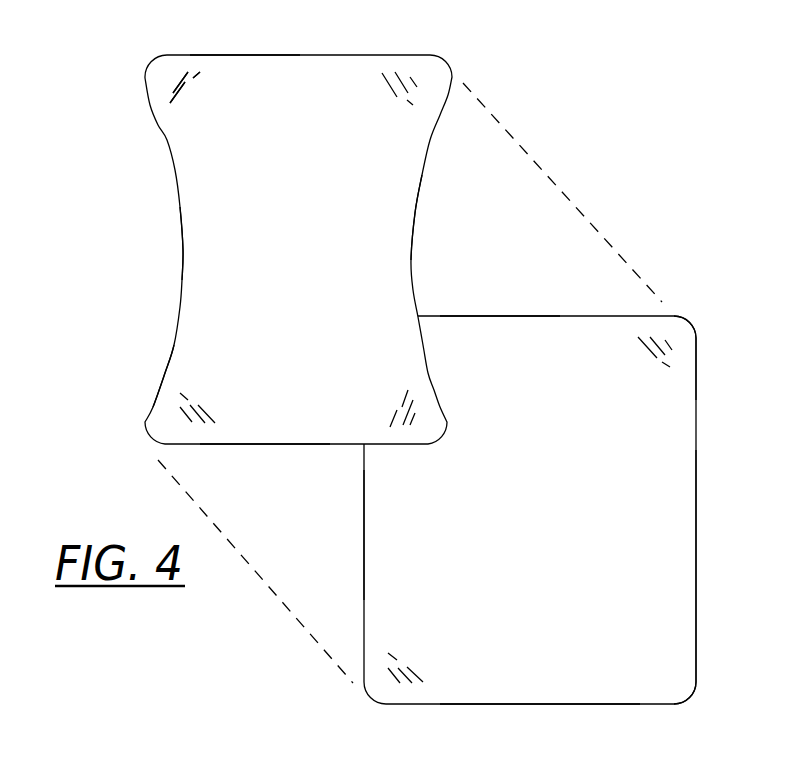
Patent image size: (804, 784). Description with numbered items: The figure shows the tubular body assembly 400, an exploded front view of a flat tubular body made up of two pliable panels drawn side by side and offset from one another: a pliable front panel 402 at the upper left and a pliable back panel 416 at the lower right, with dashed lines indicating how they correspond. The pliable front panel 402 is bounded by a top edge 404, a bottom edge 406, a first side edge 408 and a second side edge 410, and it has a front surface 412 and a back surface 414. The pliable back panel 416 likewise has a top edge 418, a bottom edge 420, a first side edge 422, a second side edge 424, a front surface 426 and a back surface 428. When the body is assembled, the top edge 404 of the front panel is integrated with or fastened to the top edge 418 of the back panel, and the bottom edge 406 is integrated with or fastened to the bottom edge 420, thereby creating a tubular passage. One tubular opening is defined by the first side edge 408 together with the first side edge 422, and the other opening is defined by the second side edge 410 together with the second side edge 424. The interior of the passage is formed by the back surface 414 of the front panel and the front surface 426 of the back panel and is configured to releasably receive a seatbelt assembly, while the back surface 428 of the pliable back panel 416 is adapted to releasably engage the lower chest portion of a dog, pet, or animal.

The tubular body assembly 400 is at (606, 124).
The pliable front panel 402 is at (313, 245).
The top edge 404 is at (242, 55).
The bottom edge 406 is at (238, 444).
The first side edge 408 is at (182, 245).
The second side edge 410 is at (415, 215).
The front surface 412 is at (210, 137).
The back surface 414 is at (152, 372).
The pliable back panel 416 is at (552, 510).
The top edge 418 is at (483, 316).
The bottom edge 420 is at (500, 704).
The first side edge 422 is at (364, 511).
The second side edge 424 is at (696, 511).
The front surface 426 is at (652, 622).
The back surface 428 is at (705, 417).